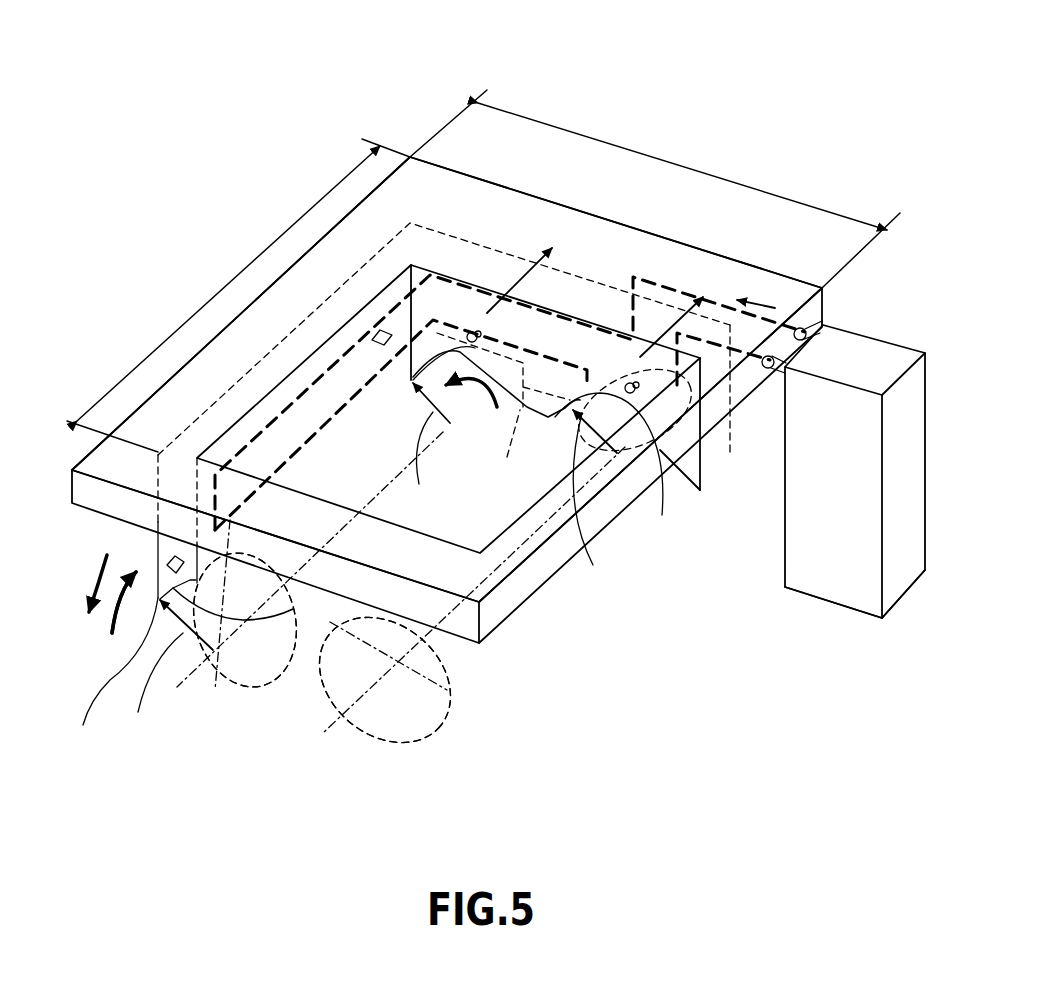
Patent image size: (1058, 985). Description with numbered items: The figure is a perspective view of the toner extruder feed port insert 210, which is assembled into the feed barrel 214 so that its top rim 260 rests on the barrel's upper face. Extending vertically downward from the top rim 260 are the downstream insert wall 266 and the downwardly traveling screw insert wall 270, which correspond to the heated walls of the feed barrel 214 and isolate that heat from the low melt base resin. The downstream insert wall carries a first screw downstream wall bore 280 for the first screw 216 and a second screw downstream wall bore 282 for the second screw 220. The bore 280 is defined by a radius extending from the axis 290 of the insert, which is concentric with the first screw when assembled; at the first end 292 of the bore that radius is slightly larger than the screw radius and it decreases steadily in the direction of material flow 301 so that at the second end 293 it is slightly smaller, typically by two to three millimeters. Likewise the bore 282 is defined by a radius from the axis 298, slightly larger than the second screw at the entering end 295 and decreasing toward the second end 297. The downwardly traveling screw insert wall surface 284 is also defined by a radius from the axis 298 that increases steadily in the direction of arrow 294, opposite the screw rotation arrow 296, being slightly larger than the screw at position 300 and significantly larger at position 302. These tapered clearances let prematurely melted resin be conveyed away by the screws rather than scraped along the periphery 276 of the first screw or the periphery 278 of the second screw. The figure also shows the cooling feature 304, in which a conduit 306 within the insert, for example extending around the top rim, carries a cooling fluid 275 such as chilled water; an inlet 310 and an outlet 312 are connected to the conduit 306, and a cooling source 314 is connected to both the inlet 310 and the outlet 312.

The insert 210 is at (398, 112).
The feed barrel 214 is at (517, 620).
The first screw 216 is at (410, 710).
The second screw 220 is at (210, 690).
The top rim 260 is at (524, 190).
The downstream insert wall 266 is at (436, 303).
The downwardly traveling screw insert wall 270 is at (280, 460).
The cooling fluid 275 is at (772, 308).
The periphery of the first screw 276 is at (440, 733).
The periphery of the second screw 278 is at (250, 697).
The first screw downstream wall bore 280 is at (617, 469).
The second screw downstream wall bore 282 is at (413, 375).
The downwardly traveling screw insert wall surface 284 is at (255, 605).
The axis of the insert 290 is at (350, 737).
The first end of bore 292 is at (590, 396).
The second end of bore 293 is at (668, 443).
The arrow 294 is at (113, 615).
The entering end of bore 295 is at (412, 380).
The arrow 296 is at (482, 392).
The second end of bore 297 is at (510, 448).
The axis of the insert 298 is at (200, 670).
The position 300 is at (110, 677).
The direction of material flow 301 is at (522, 275).
The position 302 is at (196, 580).
The cooling feature 304 is at (905, 335).
The conduit 306 is at (583, 277).
The inlet 310 is at (820, 317).
The outlet 312 is at (764, 378).
The cooling source 314 is at (824, 598).